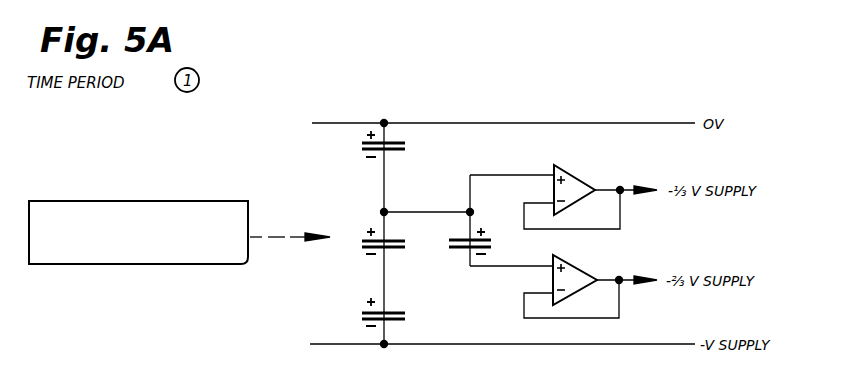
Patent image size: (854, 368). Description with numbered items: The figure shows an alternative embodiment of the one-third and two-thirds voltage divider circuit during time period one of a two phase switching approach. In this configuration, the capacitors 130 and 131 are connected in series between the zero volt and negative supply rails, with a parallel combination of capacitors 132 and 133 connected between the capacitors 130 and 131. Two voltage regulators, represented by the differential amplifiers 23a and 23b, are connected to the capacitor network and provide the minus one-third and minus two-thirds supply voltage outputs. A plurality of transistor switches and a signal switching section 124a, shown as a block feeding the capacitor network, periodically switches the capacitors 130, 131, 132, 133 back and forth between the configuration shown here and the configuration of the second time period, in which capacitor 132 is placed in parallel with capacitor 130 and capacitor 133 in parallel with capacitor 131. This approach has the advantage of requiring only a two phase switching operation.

The switches and signal switching section 124a is at (165, 264).
The capacitor 130 is at (393, 151).
The capacitor 131 is at (393, 321).
The capacitor 132 is at (393, 249).
The capacitor 133 is at (455, 239).
The differential amplifier 23a is at (580, 268).
The differential amplifier 23b is at (580, 178).